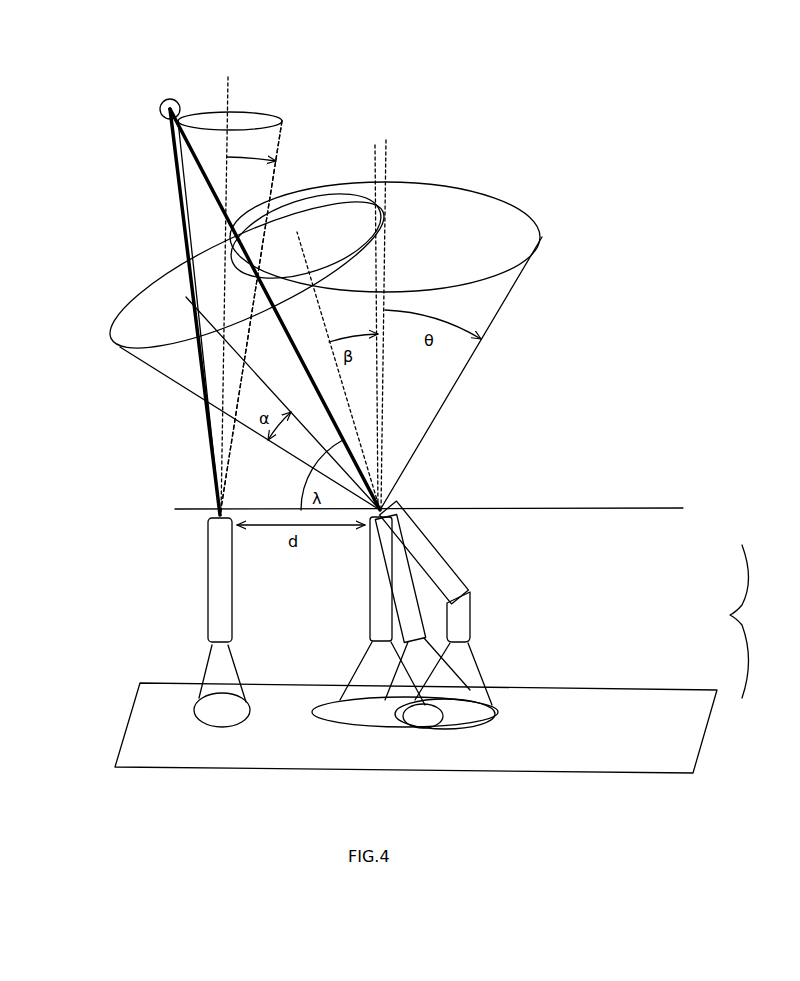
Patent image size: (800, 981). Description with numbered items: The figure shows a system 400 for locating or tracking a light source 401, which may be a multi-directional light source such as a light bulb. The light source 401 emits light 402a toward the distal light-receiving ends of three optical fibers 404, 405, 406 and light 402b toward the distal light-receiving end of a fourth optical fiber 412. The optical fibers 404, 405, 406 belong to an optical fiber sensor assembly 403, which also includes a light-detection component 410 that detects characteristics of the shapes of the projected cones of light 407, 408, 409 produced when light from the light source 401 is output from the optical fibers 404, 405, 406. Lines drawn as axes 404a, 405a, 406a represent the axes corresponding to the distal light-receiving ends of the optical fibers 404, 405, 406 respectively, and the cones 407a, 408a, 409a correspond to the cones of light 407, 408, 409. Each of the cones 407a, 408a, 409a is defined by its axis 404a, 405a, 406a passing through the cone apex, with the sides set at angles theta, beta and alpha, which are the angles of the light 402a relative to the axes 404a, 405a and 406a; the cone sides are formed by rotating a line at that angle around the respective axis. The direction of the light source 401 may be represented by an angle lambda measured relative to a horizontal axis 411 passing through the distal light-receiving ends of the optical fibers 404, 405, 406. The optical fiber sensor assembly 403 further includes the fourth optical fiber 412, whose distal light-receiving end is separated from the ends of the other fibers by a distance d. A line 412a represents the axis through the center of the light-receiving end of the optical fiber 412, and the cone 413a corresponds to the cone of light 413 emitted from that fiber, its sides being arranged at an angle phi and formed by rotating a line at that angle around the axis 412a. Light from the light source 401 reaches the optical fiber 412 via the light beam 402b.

The system 400 is at (612, 88).
The light source 401 is at (163, 98).
The light 402a is at (192, 164).
The light 402b is at (184, 220).
The optical fiber sensor assembly 403 is at (758, 621).
The optical fiber 404 is at (370, 608).
The axis 404a is at (390, 250).
The optical fiber 405 is at (408, 609).
The axis 405a is at (374, 165).
The optical fiber 406 is at (455, 583).
The axis 406a is at (175, 347).
The cone of light 407 is at (348, 673).
The cone 407a is at (168, 380).
The cone of light 408 is at (362, 724).
The cone 408a is at (385, 168).
The cone of light 409 is at (470, 668).
The cone 409a is at (515, 280).
The light-detection component 410 is at (127, 727).
The horizontal axis 411 is at (570, 507).
The fourth optical fiber 412 is at (207, 575).
The axis 412a is at (228, 92).
The cone of light 413 is at (233, 668).
The cone 413a is at (273, 177).